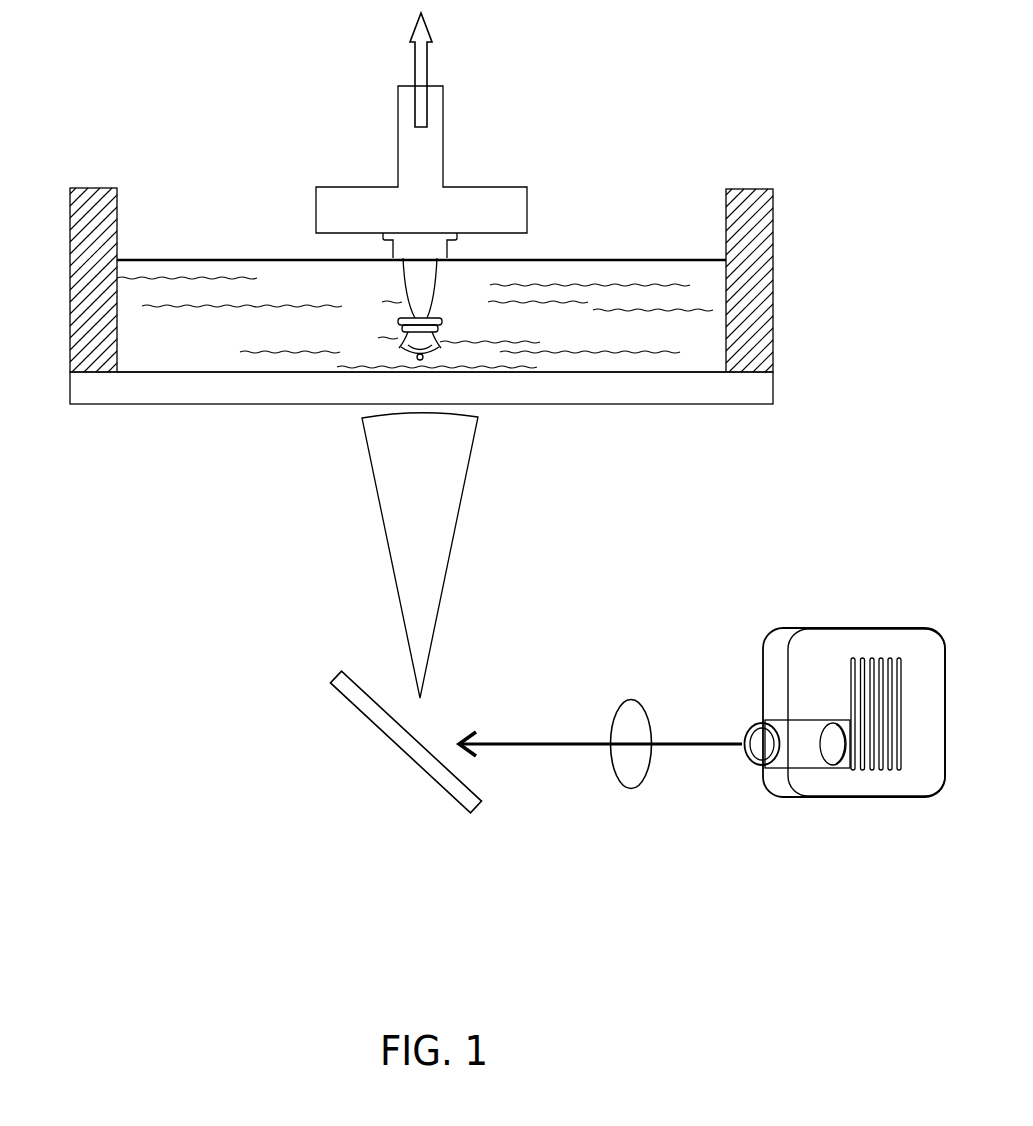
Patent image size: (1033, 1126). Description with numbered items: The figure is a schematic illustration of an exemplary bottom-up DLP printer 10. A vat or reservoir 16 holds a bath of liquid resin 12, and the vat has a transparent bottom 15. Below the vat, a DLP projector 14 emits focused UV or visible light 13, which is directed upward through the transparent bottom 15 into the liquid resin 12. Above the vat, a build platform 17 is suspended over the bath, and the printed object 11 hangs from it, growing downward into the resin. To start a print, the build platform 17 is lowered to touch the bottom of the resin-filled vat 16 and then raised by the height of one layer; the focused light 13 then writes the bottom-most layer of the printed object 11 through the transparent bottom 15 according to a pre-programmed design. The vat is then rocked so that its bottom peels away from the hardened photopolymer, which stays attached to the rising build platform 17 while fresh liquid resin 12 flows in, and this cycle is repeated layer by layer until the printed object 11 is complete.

The DLP printer 10 is at (116, 71).
The printed object 11 is at (417, 277).
The liquid resin 12 is at (547, 272).
The focused UV or visible light 13 is at (458, 522).
The DLP projector 14 is at (845, 628).
The transparent bottom 15 is at (455, 385).
The vat 16 is at (740, 189).
The build platform 17 is at (478, 186).